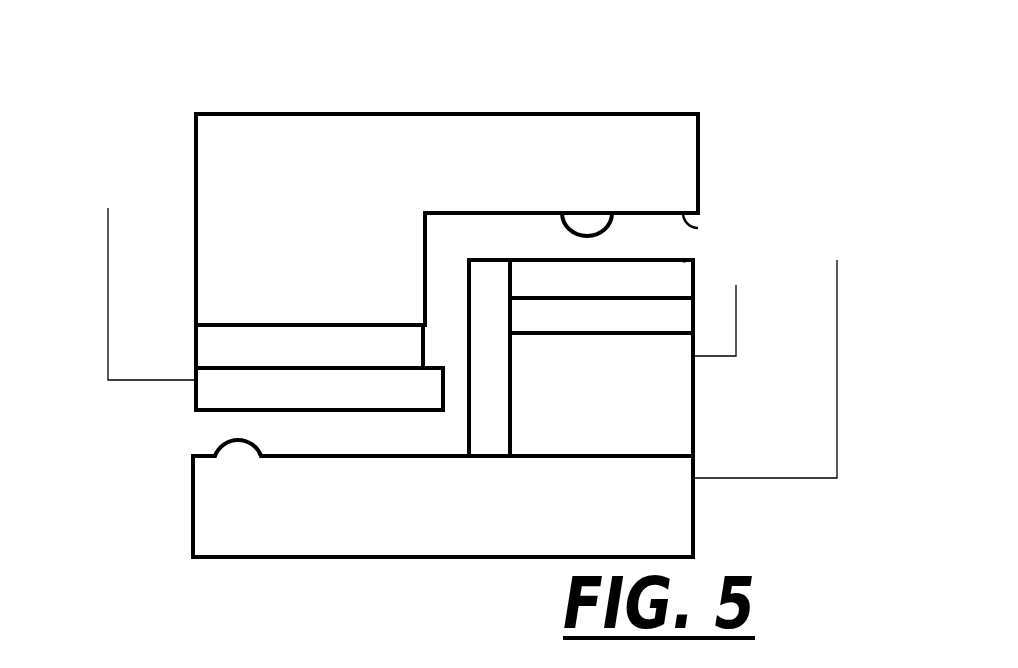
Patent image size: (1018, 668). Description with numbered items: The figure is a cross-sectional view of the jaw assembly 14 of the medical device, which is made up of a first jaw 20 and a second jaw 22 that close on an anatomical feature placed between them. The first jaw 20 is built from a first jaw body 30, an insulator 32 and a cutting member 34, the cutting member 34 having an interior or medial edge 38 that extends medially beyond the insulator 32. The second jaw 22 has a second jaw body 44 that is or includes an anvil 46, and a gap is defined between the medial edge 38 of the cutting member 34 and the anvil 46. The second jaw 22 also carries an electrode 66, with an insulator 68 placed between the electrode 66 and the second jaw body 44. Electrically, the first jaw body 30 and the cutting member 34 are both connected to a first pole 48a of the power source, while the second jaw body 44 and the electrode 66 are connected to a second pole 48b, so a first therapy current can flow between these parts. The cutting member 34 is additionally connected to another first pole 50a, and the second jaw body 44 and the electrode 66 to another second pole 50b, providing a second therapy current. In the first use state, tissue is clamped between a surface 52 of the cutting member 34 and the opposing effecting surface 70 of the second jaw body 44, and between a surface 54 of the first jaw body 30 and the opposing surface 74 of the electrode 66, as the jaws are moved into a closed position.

The jaw assembly 14 is at (680, 74).
The first jaw 20 is at (274, 100).
The second jaw 22 is at (289, 572).
The first jaw body 30 is at (350, 227).
The insulator 32 is at (335, 359).
The cutting member 34 is at (254, 402).
The medial edge 38 is at (445, 392).
The second jaw body 44 is at (380, 517).
The anvil 46 is at (503, 316).
The first pole 48a is at (196, 208).
The second pole 48b is at (693, 285).
The first pole 50a is at (196, 395).
The second pole 50b is at (693, 260).
The surface 52 is at (236, 410).
The surface 54 is at (698, 228).
The electrode 66 is at (590, 292).
The insulator 68 is at (636, 328).
The opposing effecting surface 70 is at (208, 449).
The opposing surface 74 is at (684, 261).